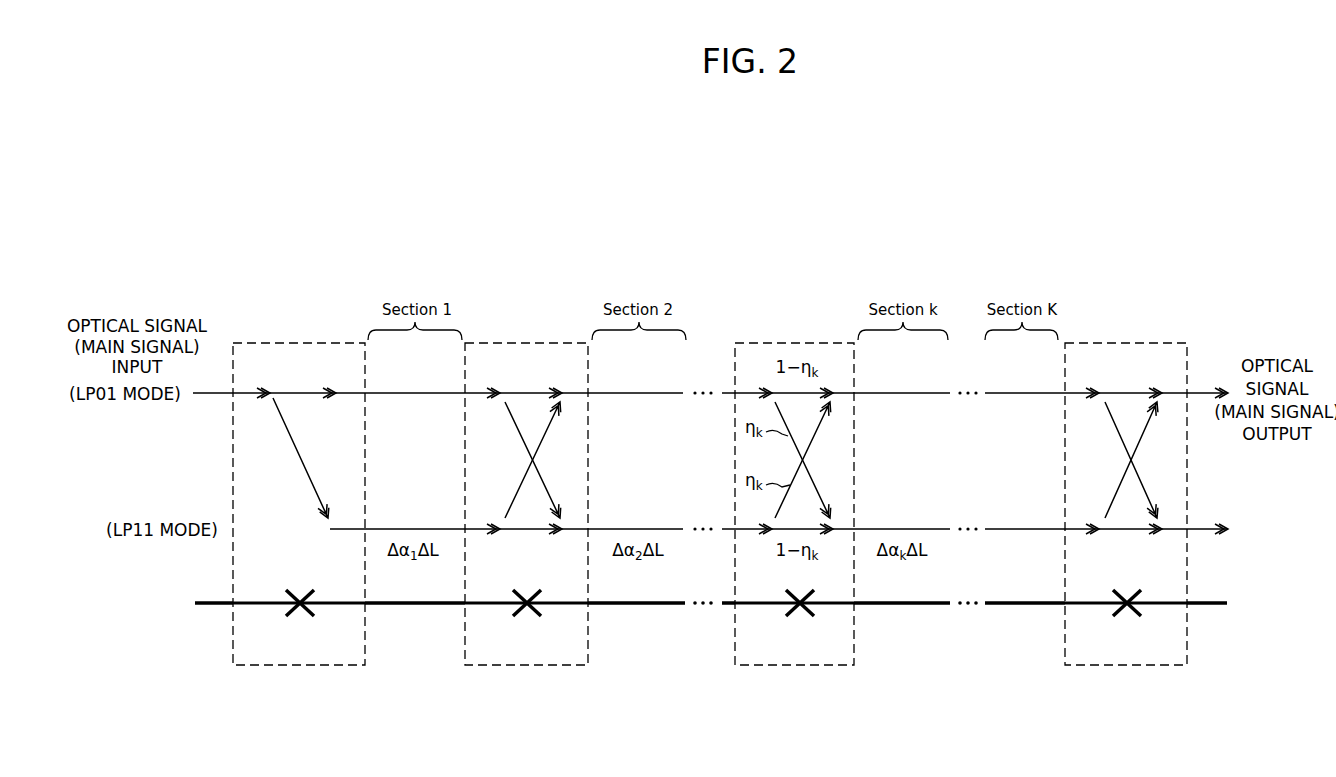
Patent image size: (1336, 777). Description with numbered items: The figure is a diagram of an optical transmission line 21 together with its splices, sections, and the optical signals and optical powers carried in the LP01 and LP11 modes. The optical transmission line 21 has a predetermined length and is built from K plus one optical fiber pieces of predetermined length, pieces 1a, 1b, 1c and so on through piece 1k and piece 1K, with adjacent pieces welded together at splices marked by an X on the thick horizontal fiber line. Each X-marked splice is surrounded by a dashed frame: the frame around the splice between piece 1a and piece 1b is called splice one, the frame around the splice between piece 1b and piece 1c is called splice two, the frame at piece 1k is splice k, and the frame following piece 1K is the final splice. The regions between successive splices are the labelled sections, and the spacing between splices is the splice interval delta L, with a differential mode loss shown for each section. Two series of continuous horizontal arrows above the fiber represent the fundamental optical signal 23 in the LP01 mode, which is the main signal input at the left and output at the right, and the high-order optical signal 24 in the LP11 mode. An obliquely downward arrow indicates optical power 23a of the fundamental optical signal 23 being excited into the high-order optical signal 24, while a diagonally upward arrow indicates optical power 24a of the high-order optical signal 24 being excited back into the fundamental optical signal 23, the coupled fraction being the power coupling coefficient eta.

The optical transmission line 21 is at (210, 601).
The fundamental optical signal 23 is at (213, 394).
The optical power 23a is at (290, 432).
The high-order optical signal 24 is at (415, 528).
The optical power 24a is at (512, 497).
The optical fiber piece 1a is at (220, 607).
The optical fiber piece 1b is at (410, 606).
The optical fiber piece 1c is at (633, 606).
The optical fiber piece 1k is at (900, 606).
The optical fiber piece 1K is at (1022, 606).